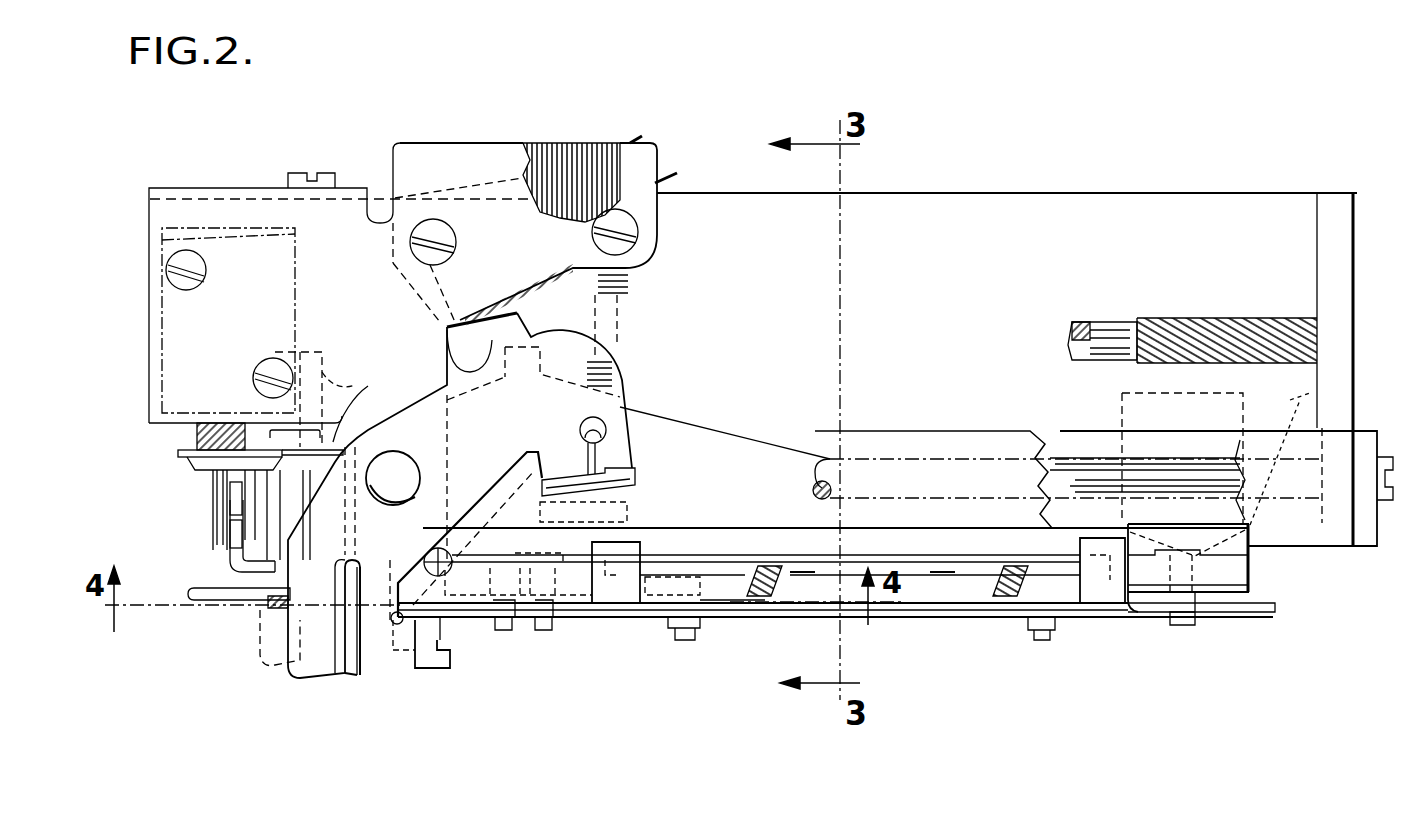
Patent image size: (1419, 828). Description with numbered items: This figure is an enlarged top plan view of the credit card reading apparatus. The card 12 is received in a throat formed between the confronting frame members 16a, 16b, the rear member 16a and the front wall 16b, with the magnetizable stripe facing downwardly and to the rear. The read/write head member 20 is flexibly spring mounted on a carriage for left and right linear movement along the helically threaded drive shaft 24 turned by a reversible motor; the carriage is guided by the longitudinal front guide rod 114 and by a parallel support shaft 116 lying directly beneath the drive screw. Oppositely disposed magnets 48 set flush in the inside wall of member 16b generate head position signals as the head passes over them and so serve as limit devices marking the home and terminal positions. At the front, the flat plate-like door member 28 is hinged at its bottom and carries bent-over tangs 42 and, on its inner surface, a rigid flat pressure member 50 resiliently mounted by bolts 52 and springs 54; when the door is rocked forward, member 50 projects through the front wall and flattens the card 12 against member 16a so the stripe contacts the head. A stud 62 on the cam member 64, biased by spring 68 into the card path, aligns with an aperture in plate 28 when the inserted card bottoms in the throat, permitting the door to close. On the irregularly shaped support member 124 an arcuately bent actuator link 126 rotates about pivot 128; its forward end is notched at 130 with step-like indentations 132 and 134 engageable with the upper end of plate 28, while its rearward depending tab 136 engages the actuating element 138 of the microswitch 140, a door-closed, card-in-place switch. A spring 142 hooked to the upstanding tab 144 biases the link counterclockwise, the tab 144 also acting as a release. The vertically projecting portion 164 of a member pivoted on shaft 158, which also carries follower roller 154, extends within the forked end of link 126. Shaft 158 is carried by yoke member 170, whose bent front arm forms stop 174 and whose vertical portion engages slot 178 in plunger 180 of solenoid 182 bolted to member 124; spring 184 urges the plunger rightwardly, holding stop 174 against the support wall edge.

The card 12 is at (920, 565).
The frame member 16a is at (1240, 540).
The frame member 16b is at (1277, 612).
The read/write transducer or head member 20 is at (1243, 582).
The helically threaded drive shaft 24 is at (1188, 318).
The door member 28 is at (940, 617).
The tangs or tabs 42 is at (625, 548).
The magnetic members 48 is at (548, 632).
The flat member 50 is at (810, 575).
The bolts 52 is at (684, 640).
The springs 54 is at (740, 603).
The stud 62 is at (508, 632).
The cam member 64 is at (512, 555).
The spring 68 is at (424, 556).
The front guide rod or shaft 114 is at (955, 455).
The support shaft 116 is at (1072, 325).
The support member 124 is at (450, 182).
The actuator link 126 is at (500, 446).
The pivot 128 is at (390, 465).
The notch 130 is at (361, 682).
The step-like indentation 132 is at (440, 665).
The step-like indentation 134 is at (445, 636).
The tang or tab 136 is at (667, 388).
The actuating element 138 is at (515, 318).
The microswitch 140 is at (558, 146).
The spring 142 is at (624, 287).
The upstanding tab 144 is at (562, 480).
The follower roller 154 is at (356, 402).
The pivot shaft 158 is at (275, 612).
The vertically projecting portion 164 is at (350, 680).
The yoke member 170 is at (225, 572).
The stop 174 is at (188, 592).
The slot 178 is at (240, 530).
The plunger 180 is at (213, 492).
The solenoid 182 is at (160, 318).
The spring 184 is at (198, 428).